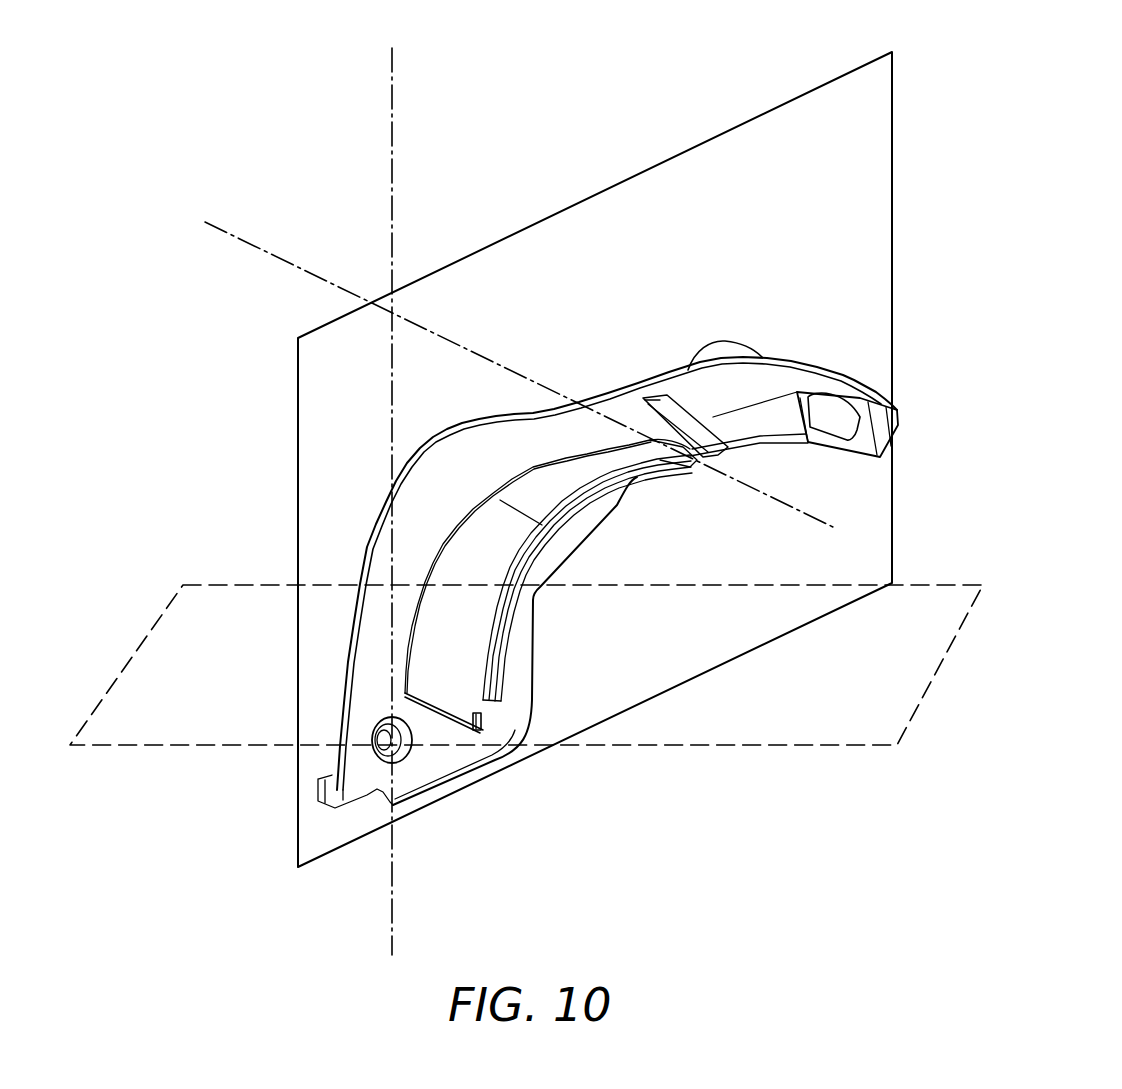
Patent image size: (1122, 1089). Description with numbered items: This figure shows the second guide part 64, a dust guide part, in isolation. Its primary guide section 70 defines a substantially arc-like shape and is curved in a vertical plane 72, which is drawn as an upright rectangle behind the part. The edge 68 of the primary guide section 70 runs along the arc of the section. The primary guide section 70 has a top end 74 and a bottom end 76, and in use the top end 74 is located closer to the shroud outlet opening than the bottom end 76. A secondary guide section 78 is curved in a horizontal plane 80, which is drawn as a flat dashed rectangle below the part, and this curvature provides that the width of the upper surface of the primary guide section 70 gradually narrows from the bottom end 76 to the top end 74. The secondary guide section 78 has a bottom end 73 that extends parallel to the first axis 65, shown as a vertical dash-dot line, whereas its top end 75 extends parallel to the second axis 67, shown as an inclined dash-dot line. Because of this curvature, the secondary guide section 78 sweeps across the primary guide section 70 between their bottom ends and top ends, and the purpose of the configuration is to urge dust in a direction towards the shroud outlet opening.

The second guide part 64 is at (533, 669).
The first axis 65 is at (393, 57).
The second axis 67 is at (228, 232).
The edge 68 is at (506, 619).
The primary guide section 70 is at (445, 633).
The vertical plane 72 is at (892, 52).
The bottom end of the secondary guide section 73 is at (383, 705).
The top end of the primary guide section 74 is at (677, 477).
The top end of the secondary guide section 75 is at (667, 424).
The bottom end of the primary guide section 76 is at (483, 740).
The secondary guide section 78 is at (443, 497).
The horizontal plane 80 is at (897, 745).